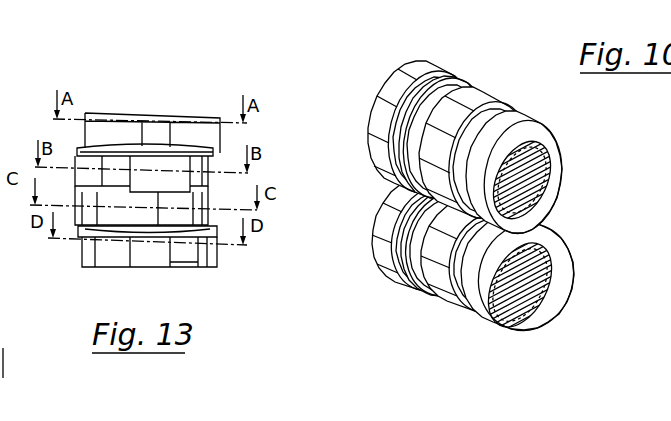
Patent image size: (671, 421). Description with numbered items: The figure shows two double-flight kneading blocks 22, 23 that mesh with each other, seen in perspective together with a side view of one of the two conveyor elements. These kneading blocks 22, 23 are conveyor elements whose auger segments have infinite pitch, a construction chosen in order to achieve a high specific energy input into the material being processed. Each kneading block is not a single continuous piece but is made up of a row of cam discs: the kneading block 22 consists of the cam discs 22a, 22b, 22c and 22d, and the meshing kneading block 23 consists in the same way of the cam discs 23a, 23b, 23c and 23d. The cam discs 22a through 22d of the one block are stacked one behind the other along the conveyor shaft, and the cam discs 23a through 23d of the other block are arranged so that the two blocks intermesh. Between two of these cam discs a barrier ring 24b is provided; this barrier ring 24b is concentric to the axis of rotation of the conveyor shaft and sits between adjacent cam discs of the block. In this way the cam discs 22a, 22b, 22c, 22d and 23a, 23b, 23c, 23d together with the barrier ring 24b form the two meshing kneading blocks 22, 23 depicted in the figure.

The kneading block 22 is at (478, 153).
The cam disc 22a is at (538, 131).
The cam disc 22b is at (500, 104).
The cam disc 22c is at (392, 175).
The cam disc 22d is at (378, 120).
The kneading block 23 is at (482, 282).
The cam disc 23a is at (567, 271).
The cam disc 23b is at (422, 298).
The cam disc 23c is at (400, 277).
The cam disc 23d is at (383, 263).
The barrier ring 24b is at (460, 330).